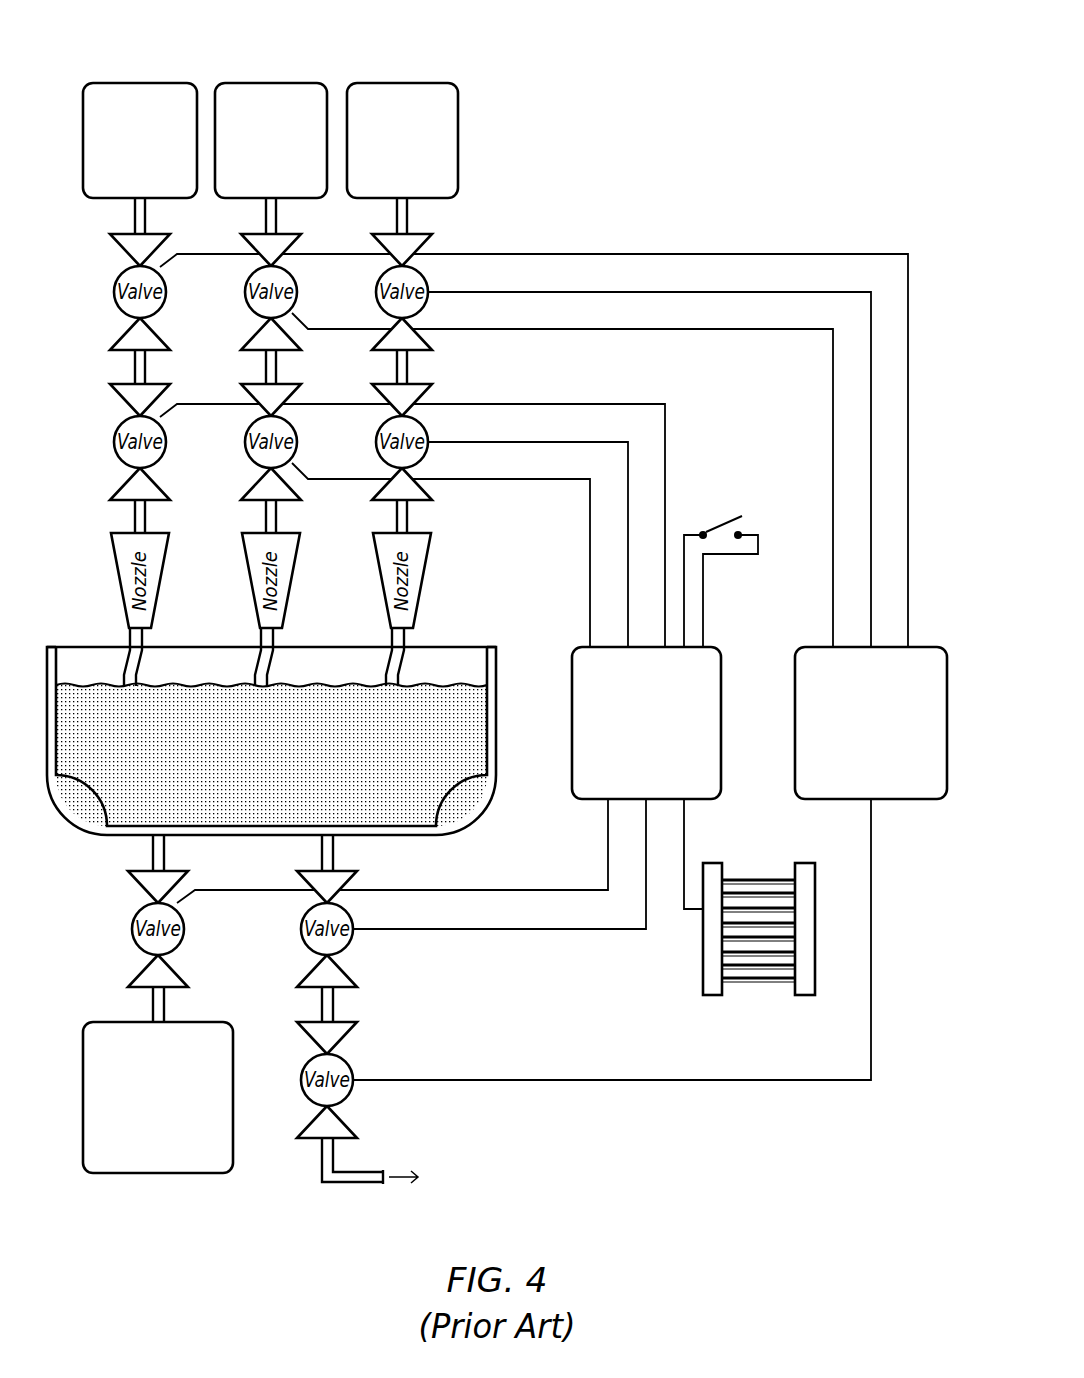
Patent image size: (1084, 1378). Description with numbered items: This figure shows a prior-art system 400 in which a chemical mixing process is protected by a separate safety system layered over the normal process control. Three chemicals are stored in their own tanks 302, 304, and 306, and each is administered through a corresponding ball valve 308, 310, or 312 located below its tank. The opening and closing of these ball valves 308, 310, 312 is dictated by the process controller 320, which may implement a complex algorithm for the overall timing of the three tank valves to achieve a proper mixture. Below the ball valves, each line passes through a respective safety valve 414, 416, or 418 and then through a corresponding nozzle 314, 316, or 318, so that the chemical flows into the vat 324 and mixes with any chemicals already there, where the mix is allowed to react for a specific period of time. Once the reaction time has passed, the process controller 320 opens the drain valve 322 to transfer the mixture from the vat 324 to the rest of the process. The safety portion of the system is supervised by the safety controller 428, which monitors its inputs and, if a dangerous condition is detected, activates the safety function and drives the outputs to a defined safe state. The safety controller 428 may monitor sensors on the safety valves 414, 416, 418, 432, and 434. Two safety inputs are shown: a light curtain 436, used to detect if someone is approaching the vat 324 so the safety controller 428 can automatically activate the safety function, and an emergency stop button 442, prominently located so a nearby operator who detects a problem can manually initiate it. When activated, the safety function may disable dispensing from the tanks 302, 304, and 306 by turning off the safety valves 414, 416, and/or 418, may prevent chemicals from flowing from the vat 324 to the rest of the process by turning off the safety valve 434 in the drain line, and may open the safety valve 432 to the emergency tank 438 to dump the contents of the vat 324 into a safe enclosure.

The system 400 is at (762, 44).
The tank 302 is at (140, 83).
The tank 304 is at (274, 83).
The tank 306 is at (405, 83).
The ball valve 308 is at (114, 292).
The ball valve 310 is at (245, 292).
The ball valve 312 is at (376, 292).
The safety valve 414 is at (114, 442).
The safety valve 416 is at (245, 442).
The safety valve 418 is at (376, 442).
The nozzle 314 is at (122, 590).
The nozzle 316 is at (252, 590).
The nozzle 318 is at (384, 590).
The vat 324 is at (257, 771).
The process controller 320 is at (932, 647).
The safety controller 428 is at (592, 800).
The emergency stop button 442 is at (743, 527).
The safety valve 432 is at (132, 929).
The safety valve 434 is at (301, 929).
The drain valve 322 is at (354, 1072).
The emergency tank 438 is at (207, 1022).
The light curtain 436 is at (703, 956).